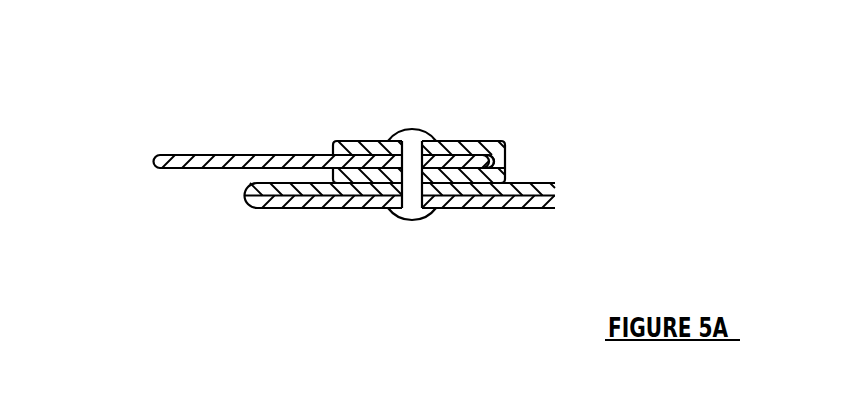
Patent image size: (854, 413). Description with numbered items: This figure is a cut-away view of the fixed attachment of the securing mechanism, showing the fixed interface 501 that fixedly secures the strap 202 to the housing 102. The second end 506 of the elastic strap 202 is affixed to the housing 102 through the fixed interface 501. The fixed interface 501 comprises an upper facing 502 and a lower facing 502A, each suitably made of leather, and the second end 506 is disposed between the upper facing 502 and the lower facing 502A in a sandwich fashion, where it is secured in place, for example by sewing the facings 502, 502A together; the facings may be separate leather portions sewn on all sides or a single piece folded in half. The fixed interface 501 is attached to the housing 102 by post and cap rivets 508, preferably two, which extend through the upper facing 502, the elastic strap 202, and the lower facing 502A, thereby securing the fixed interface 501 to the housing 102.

The fixed interface 501 is at (615, 117).
The housing 102 is at (522, 183).
The strap 202 is at (160, 157).
The upper facing 502 is at (450, 148).
The lower facing 502A is at (460, 175).
The second end 506 is at (368, 176).
The post and cap rivets 508 is at (412, 140).